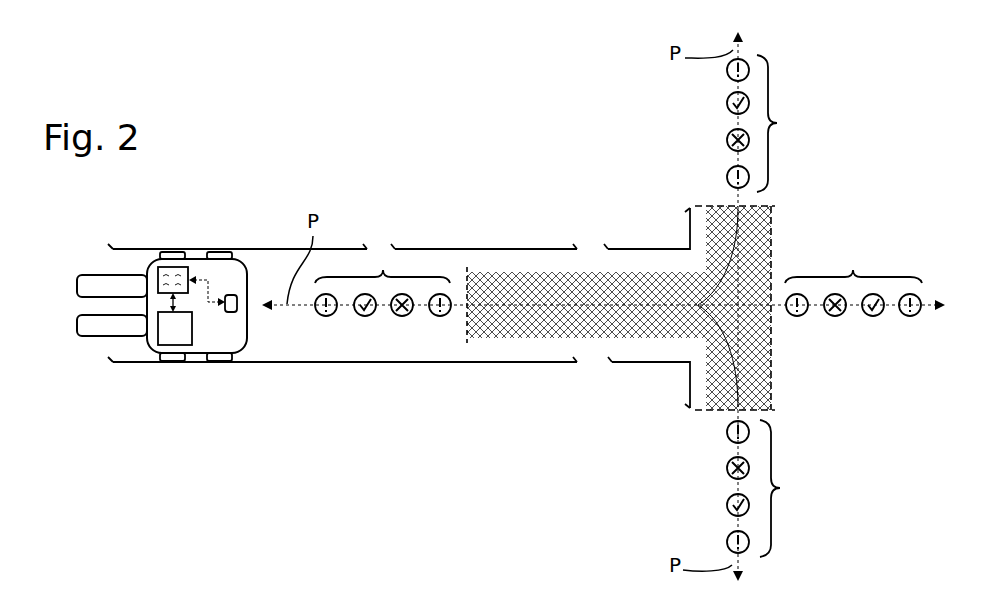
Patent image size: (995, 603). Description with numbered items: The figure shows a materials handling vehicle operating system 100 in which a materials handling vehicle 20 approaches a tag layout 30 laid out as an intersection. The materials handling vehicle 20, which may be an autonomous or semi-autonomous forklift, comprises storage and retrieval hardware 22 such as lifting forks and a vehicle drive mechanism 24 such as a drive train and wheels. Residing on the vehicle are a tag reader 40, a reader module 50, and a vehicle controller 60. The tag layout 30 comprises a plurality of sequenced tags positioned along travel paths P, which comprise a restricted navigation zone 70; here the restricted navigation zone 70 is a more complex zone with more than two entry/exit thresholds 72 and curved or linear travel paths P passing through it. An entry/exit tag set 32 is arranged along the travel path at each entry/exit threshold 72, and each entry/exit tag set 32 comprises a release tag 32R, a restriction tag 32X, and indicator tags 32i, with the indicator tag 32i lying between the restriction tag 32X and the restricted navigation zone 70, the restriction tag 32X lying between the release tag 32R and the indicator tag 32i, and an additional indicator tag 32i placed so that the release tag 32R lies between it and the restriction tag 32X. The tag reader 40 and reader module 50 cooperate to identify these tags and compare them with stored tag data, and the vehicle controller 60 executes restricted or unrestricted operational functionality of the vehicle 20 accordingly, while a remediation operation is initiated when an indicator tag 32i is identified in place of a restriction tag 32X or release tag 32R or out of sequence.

The materials handling vehicle 20 is at (203, 253).
The storage and retrieval hardware 22 is at (107, 338).
The vehicle drive mechanism 24 is at (220, 360).
The tag layout 30 is at (374, 171).
The entry/exit tag set 32 is at (618, 306).
The indicator tag 32i is at (326, 316).
The release tag 32R is at (365, 316).
The restriction tag 32X is at (402, 316).
The tag reader 40 is at (228, 294).
The reader module 50 is at (170, 258).
The vehicle controller 60 is at (177, 360).
The restricted navigation zone 70 is at (575, 338).
The entry/exit threshold 72 is at (463, 276).
The materials handling vehicle operating system 100 is at (427, 197).